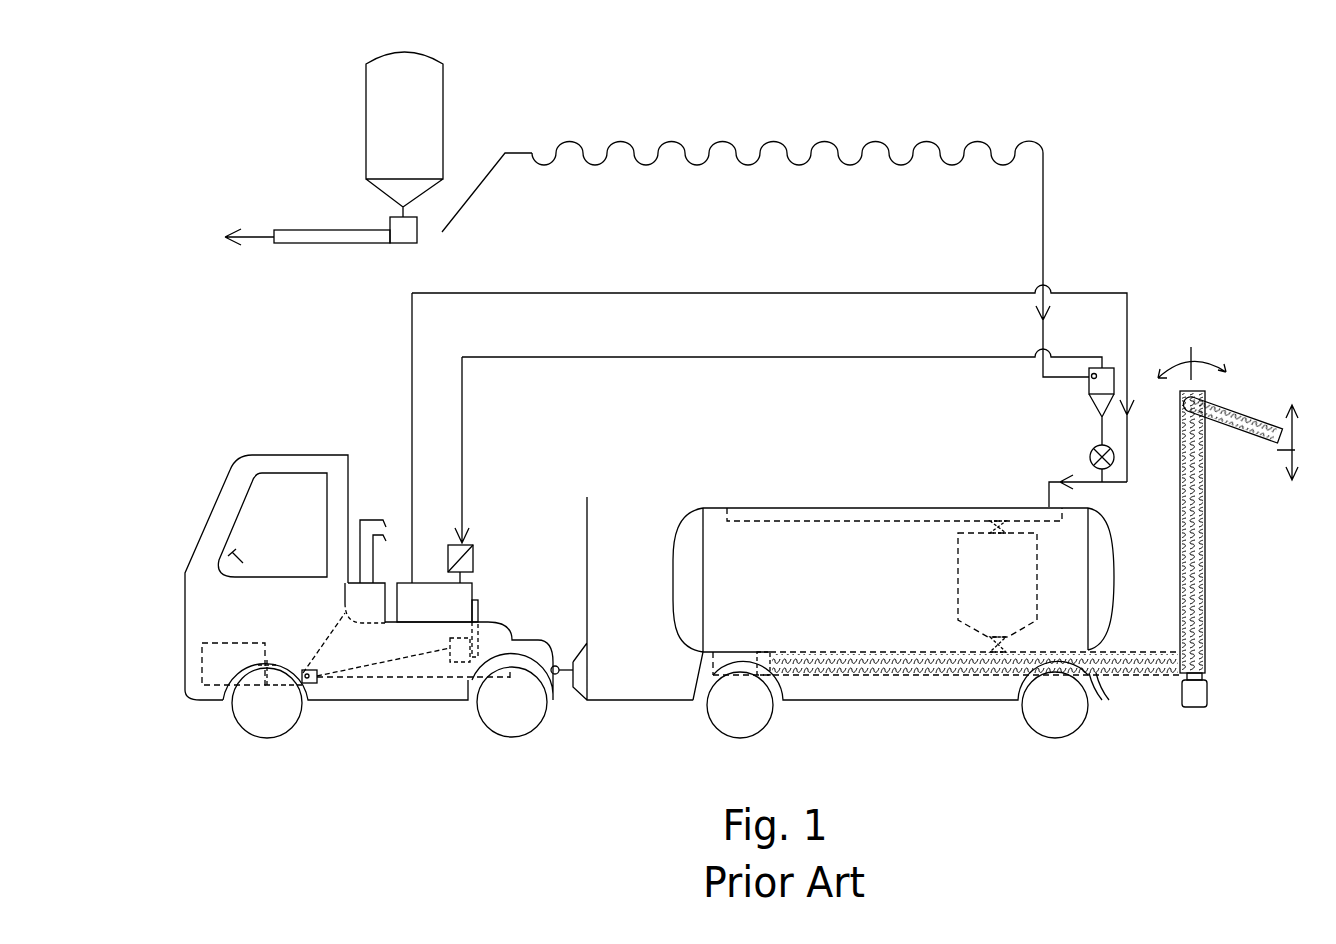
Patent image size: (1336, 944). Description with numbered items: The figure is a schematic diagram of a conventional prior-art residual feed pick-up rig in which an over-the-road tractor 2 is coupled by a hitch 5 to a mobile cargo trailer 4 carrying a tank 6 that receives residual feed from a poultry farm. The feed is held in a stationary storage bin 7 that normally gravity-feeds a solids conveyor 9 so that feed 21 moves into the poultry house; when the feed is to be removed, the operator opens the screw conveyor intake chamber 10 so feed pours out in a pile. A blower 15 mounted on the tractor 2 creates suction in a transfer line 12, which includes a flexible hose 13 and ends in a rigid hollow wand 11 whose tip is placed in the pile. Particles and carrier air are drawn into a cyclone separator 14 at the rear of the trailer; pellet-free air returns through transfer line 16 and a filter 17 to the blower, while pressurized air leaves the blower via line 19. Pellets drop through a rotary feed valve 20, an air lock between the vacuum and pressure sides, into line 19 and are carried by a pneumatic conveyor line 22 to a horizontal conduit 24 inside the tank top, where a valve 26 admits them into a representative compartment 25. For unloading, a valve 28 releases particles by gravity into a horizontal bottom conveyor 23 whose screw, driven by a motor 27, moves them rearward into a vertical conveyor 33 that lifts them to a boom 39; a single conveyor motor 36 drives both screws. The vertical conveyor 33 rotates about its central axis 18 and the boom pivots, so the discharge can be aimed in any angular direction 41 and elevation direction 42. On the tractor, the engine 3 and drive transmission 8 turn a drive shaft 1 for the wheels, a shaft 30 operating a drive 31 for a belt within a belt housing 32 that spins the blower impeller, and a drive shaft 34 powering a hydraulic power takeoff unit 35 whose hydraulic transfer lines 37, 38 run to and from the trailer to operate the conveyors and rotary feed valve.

The drive shaft 1 is at (458, 682).
The over-the-road tractor 2 is at (290, 454).
The tractor engine 3 is at (238, 642).
The mobile cargo trailer 4 is at (588, 542).
The hitch 5 is at (562, 680).
The tank 6 is at (689, 522).
The storage bin 7 is at (366, 150).
The drive transmission 8 is at (300, 668).
The solids conveyor 9 is at (312, 230).
The screw conveyor intake chamber 10 is at (390, 222).
The rigid hollow wand 11 is at (490, 176).
The transfer line 12 is at (1042, 248).
The flexible hose 13 is at (798, 170).
The cyclone separator 14 is at (1089, 383).
The blower 15 is at (462, 598).
The transfer line 16 is at (645, 358).
The filter 17 is at (476, 562).
The central axis 18 is at (1194, 350).
The line 19 is at (733, 295).
The rotary feed valve 20 is at (1093, 449).
The feed 21 is at (252, 234).
The pneumatic conveyor line 22 is at (1049, 495).
The horizontal bottom conveyor 23 is at (1127, 676).
The horizontal conduit 24 is at (820, 522).
The compartment 25 is at (957, 616).
The valve 26 is at (993, 528).
The motor 27 is at (768, 652).
The valve 28 is at (995, 652).
The shaft 30 is at (387, 663).
The drive 31 is at (447, 660).
The belt housing 32 is at (478, 612).
The vertical conveyor 33 is at (1178, 567).
The drive shaft 34 is at (323, 647).
The hydraulic power takeoff unit 35 is at (375, 597).
The conveyor motor 36 is at (1180, 693).
The hydraulic transfer line 37 is at (364, 518).
The hydraulic transfer line 38 is at (375, 548).
The boom 39 is at (1227, 407).
The angular direction 41 is at (1157, 372).
The elevation direction 42 is at (1278, 450).